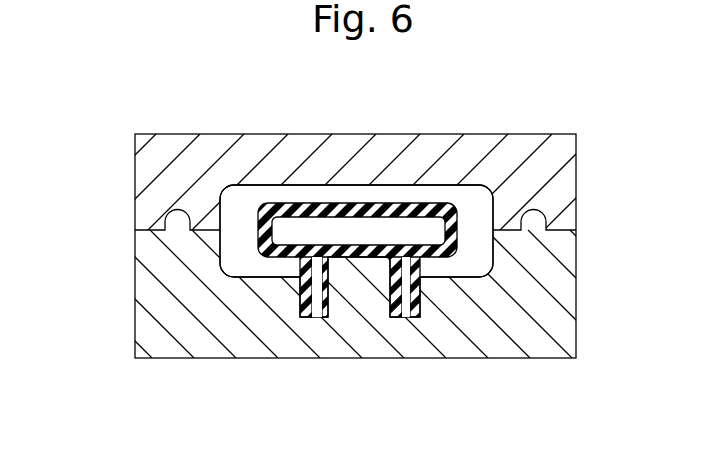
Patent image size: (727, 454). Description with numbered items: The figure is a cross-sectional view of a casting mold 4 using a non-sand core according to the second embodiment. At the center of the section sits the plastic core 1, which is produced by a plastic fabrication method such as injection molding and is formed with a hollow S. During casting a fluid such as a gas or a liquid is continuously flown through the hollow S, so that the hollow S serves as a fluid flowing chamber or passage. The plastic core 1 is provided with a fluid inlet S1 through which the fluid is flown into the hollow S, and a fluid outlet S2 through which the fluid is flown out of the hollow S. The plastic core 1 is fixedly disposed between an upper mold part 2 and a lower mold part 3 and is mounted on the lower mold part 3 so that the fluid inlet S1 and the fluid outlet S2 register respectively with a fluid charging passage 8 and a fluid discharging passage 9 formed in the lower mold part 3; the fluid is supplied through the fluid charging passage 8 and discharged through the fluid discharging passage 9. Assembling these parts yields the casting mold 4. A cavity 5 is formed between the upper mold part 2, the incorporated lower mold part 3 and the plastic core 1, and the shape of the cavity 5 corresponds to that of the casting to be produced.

The plastic core 1 is at (447, 215).
The upper mold part 2 is at (577, 185).
The lower mold part 3 is at (572, 307).
The casting mold 4 is at (134, 202).
The cavity 5 is at (243, 210).
The fluid charging passage 8 is at (317, 257).
The fluid discharging passage 9 is at (406, 257).
The hollow S is at (370, 227).
The fluid inlet S1 is at (317, 247).
The fluid outlet S2 is at (403, 250).